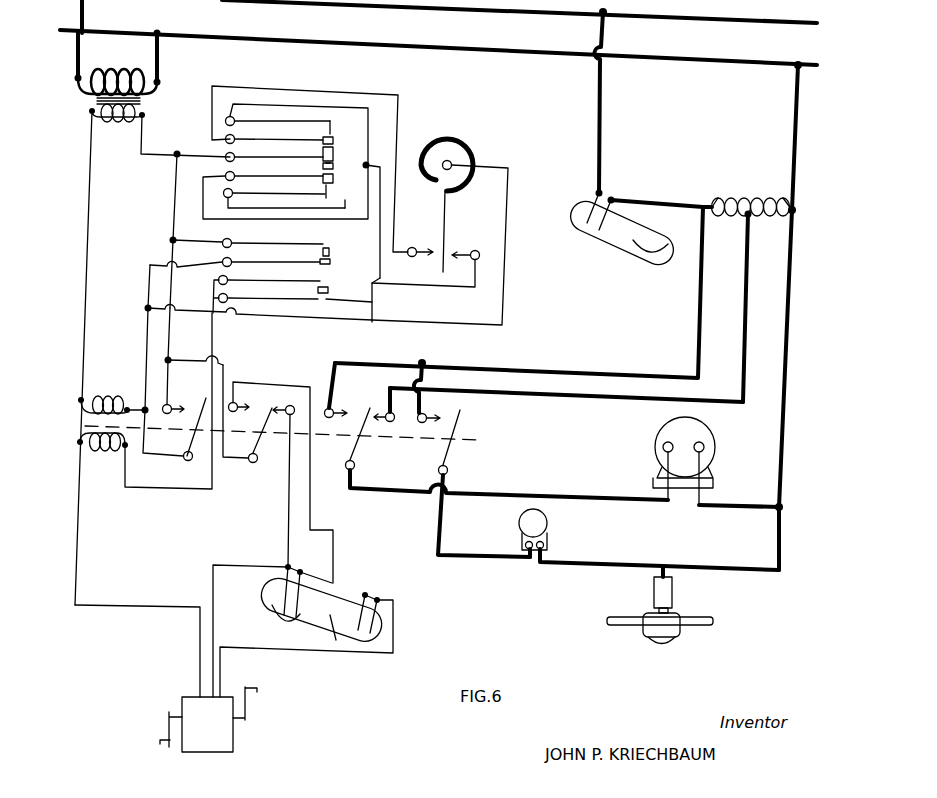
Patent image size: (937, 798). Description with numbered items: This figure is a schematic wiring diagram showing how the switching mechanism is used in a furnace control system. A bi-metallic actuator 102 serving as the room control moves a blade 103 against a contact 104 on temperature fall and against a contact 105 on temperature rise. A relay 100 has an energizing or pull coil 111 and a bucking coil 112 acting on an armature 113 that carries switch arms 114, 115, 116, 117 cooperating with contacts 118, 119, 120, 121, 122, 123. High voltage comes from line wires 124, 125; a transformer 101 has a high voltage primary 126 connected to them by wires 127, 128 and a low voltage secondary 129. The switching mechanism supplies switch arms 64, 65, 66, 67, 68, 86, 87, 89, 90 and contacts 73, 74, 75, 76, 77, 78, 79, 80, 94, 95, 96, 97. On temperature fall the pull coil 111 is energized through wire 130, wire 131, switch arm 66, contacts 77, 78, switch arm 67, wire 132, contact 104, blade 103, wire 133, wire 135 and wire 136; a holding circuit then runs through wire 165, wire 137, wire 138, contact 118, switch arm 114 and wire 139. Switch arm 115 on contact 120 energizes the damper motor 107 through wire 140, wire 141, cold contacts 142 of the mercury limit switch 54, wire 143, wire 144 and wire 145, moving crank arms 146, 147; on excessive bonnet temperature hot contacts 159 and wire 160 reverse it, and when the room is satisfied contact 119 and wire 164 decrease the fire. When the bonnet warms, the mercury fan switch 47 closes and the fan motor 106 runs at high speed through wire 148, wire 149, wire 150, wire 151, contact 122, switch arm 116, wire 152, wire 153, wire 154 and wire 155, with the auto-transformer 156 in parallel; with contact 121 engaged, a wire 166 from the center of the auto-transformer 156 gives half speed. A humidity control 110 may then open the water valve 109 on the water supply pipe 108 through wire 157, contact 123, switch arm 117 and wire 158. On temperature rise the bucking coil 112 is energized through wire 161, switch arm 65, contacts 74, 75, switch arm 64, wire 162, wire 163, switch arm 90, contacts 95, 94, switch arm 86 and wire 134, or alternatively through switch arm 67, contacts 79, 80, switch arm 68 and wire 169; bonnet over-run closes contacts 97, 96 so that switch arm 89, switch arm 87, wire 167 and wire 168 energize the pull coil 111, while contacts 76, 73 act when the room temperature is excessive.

The mercury switch 47 is at (628, 244).
The mercury switch 54 is at (320, 633).
The switch arm 64 is at (282, 188).
The switch arm 65 is at (275, 171).
The switch arm 66 is at (277, 152).
The switch arm 67 is at (283, 134).
The switch arm 68 is at (288, 116).
The contact 73 is at (320, 170).
The contact 74 is at (329, 193).
The contact 75 is at (357, 207).
The contact 76 is at (335, 180).
The contact 77 is at (335, 167).
The contact 78 is at (335, 154).
The contact 79 is at (335, 141).
The contact 80 is at (347, 121).
The switch arm 86 is at (277, 276).
The switch arm 87 is at (277, 257).
The switch arm 89 is at (277, 239).
The switch arm 90 is at (270, 294).
The contact 94 is at (330, 291).
The contact 95 is at (335, 306).
The contact 96 is at (331, 263).
The contact 97 is at (331, 252).
The relay 100 is at (106, 382).
The transformer 101 is at (148, 103).
The bi-metallic actuator 102 is at (472, 150).
The blade 103 is at (445, 220).
The contact 104 is at (432, 250).
The contact 105 is at (455, 252).
The motor 106 is at (705, 438).
The damper motor 107 is at (222, 745).
The water supply pipe 108 is at (630, 630).
The valve 109 is at (675, 597).
The humidity control 110 is at (548, 522).
The energizing or pull coil 111 is at (116, 387).
The de-energizing or bucking coil 112 is at (108, 452).
The armature 113 is at (260, 447).
The switch arm 114 is at (203, 404).
The switch arm 115 is at (258, 405).
The switch arm 116 is at (372, 413).
The switch arm 117 is at (460, 412).
The contact 118 is at (190, 410).
The contact 119 is at (272, 414).
The contact 120 is at (250, 412).
The contact 121 is at (375, 414).
The contact 122 is at (348, 416).
The contact 123 is at (433, 429).
The line wire 124 is at (405, 8).
The line wire 125 is at (420, 48).
The high voltage primary 126 is at (100, 68).
The wire 127 is at (84, 10).
The wire 128 is at (159, 66).
The low voltage secondary 129 is at (118, 122).
The wire 130 is at (142, 147).
The wire 131 is at (195, 154).
The wire 132 is at (242, 94).
The wire 133 is at (503, 302).
The wire 134 is at (216, 296).
The wire 135 is at (147, 347).
The wire 136 is at (86, 270).
The wire 137 is at (173, 343).
The wire 138 is at (178, 372).
The wire 139 is at (168, 457).
The wire 140 is at (226, 395).
The wire 141 is at (288, 388).
The cold contacts 142 is at (385, 598).
The wire 143 is at (292, 658).
The wire 144 is at (138, 600).
The wire 145 is at (80, 428).
The crank arm 146 is at (250, 703).
The crank arm 147 is at (166, 718).
The wire 148 is at (600, 157).
The wire 149 is at (672, 206).
The wire 150 is at (696, 310).
The wire 151 is at (393, 366).
The wire 152 is at (380, 490).
The wire 153 is at (718, 500).
The wire 154 is at (784, 423).
The wire 155 is at (796, 147).
The auto-transformer 156 is at (730, 200).
The wire 157 is at (426, 378).
The wire 158 is at (781, 552).
The hot contacts 159 is at (262, 620).
The wire 160 is at (232, 563).
The wire 161 is at (440, 292).
The wire 162 is at (275, 204).
The wire 163 is at (382, 270).
The wire 164 is at (288, 510).
The wire 165 is at (173, 205).
The wire 166 is at (744, 312).
The wire 167 is at (206, 243).
The wire 168 is at (215, 262).
The wire 169 is at (380, 167).